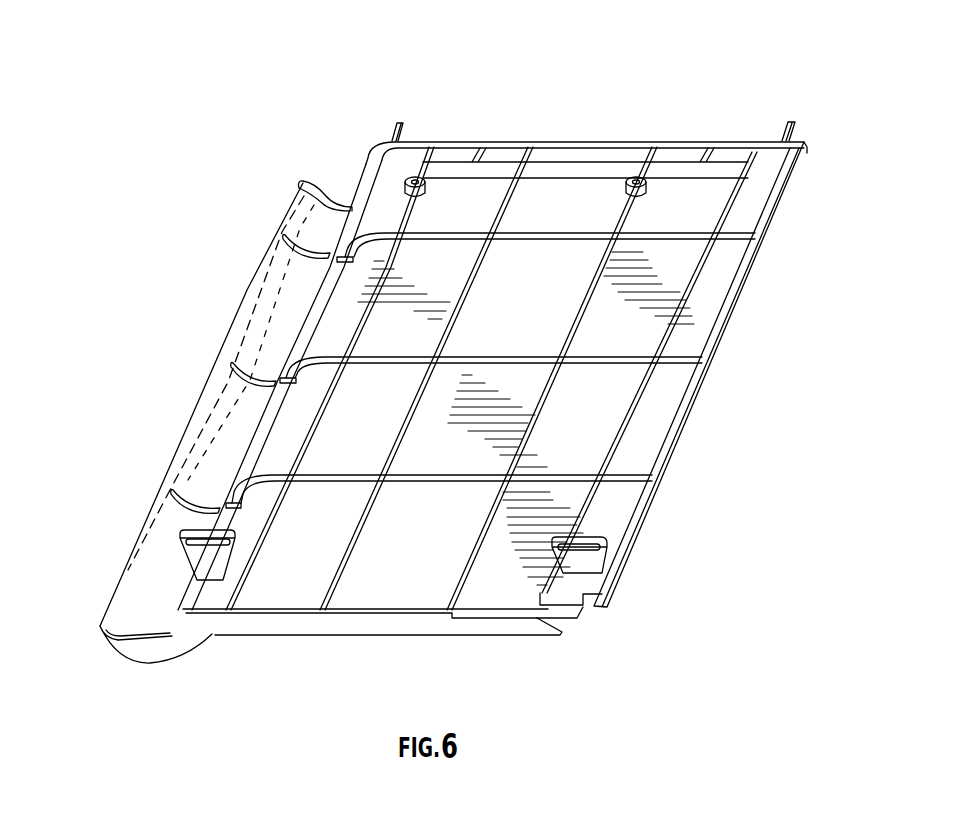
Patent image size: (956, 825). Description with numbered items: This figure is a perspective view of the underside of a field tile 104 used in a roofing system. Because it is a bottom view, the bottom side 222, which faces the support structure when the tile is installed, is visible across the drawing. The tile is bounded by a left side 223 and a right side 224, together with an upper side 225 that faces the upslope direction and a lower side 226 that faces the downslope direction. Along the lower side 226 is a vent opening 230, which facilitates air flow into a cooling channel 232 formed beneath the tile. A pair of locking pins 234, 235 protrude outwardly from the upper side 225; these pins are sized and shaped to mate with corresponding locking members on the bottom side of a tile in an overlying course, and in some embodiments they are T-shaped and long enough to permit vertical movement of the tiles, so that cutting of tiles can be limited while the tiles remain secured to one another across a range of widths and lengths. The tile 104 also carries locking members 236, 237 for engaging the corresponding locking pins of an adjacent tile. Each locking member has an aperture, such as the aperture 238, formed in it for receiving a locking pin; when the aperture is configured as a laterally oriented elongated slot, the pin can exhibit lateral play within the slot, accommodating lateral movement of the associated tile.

The field tile 104 is at (452, 370).
The bottom side 222 is at (330, 428).
The left side 223 is at (668, 465).
The right side 224 is at (253, 296).
The upper side 225 is at (592, 138).
The lower side 226 is at (497, 627).
The vent opening 230 is at (292, 615).
The cooling channel 232 is at (378, 598).
The locking pin 234 is at (783, 121).
The locking pin 235 is at (406, 131).
The locking member 236 is at (205, 561).
The locking member 237 is at (624, 570).
The aperture 238 is at (598, 548).